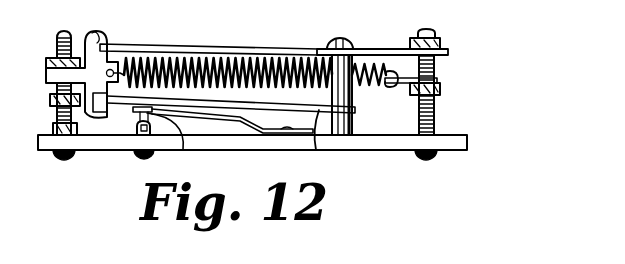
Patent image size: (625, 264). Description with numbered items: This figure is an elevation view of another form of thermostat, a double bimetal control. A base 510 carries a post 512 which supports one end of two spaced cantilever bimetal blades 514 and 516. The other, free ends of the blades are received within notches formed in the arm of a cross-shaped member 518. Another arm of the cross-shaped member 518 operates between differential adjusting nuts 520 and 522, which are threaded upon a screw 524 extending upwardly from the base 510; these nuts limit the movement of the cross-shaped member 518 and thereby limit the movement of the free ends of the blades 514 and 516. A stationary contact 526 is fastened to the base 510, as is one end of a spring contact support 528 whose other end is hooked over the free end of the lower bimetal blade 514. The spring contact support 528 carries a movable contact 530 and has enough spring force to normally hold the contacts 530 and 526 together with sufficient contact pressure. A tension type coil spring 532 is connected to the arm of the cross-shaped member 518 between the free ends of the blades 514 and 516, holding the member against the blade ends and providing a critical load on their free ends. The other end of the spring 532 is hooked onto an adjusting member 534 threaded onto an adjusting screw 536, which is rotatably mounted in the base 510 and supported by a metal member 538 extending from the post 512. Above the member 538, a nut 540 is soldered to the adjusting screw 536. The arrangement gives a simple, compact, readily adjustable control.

The base 510 is at (467, 140).
The post 512 is at (352, 120).
The lower bimetal blade 514 is at (316, 150).
The bimetal blade 516 is at (285, 49).
The cross-shaped member 518 is at (90, 43).
The differential adjusting nut 520 is at (46, 63).
The differential adjusting nut 522 is at (50, 100).
The screw 524 is at (53, 125).
The stationary contact 526 is at (137, 128).
The spring contact support 528 is at (234, 124).
The movable contact 530 is at (183, 150).
The tension type coil spring 532 is at (142, 62).
The adjusting member 534 is at (440, 82).
The adjusting screw 536 is at (434, 108).
The metal member 538 is at (388, 49).
The nut 540 is at (440, 44).